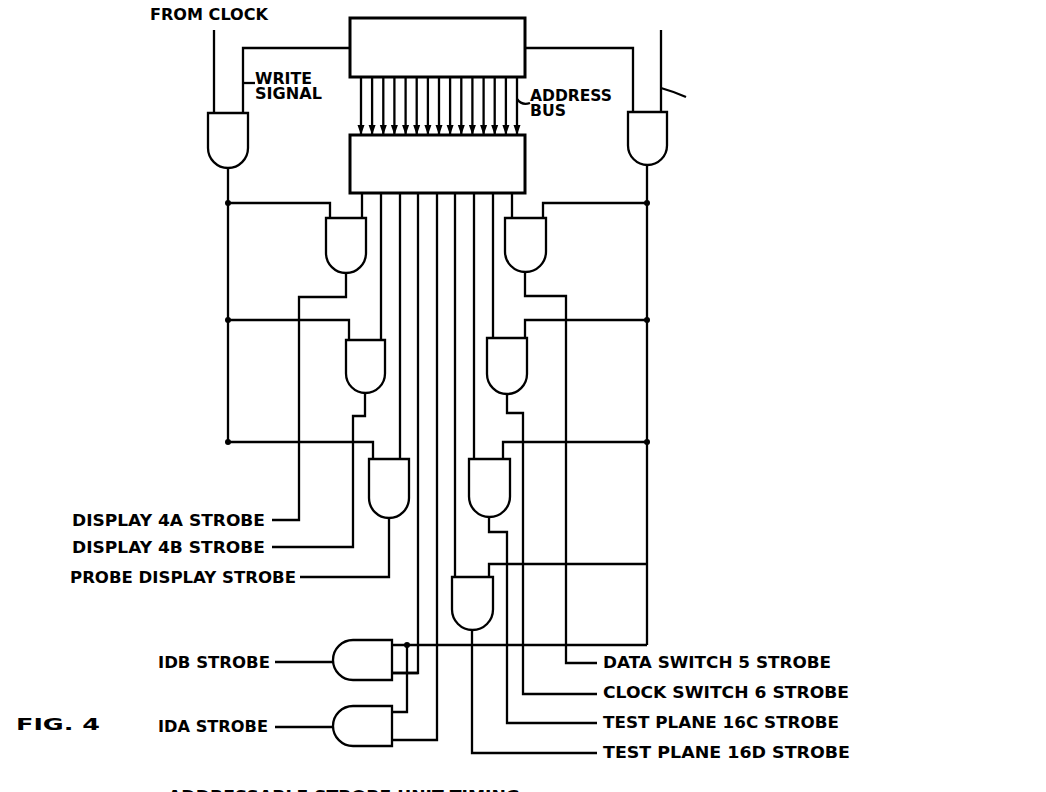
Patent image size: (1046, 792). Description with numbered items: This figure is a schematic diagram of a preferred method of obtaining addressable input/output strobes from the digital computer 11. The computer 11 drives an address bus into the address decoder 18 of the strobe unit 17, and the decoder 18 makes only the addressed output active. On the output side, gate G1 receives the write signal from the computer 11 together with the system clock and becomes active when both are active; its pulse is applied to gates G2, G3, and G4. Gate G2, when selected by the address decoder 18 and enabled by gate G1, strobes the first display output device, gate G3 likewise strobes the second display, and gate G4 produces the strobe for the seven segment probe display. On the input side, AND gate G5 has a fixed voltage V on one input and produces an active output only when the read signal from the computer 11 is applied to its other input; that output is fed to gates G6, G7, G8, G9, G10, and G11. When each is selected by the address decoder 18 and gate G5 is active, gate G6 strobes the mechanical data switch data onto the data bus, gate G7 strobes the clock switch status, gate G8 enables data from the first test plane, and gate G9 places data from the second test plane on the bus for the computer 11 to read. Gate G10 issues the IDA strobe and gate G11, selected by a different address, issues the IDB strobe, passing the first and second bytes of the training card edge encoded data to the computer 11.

The digital computer 11 is at (525, 30).
The address decoder 18 is at (525, 167).
The strobe unit 17 is at (681, 61).
The gate G1 is at (248, 152).
The gate G2 is at (326, 252).
The gate G3 is at (346, 373).
The gate G4 is at (372, 512).
The AND gate G5 is at (667, 130).
The gate G6 is at (546, 250).
The gate G7 is at (524, 388).
The gate G8 is at (510, 478).
The gate G9 is at (476, 512).
The gate G10 is at (357, 706).
The gate G11 is at (378, 640).